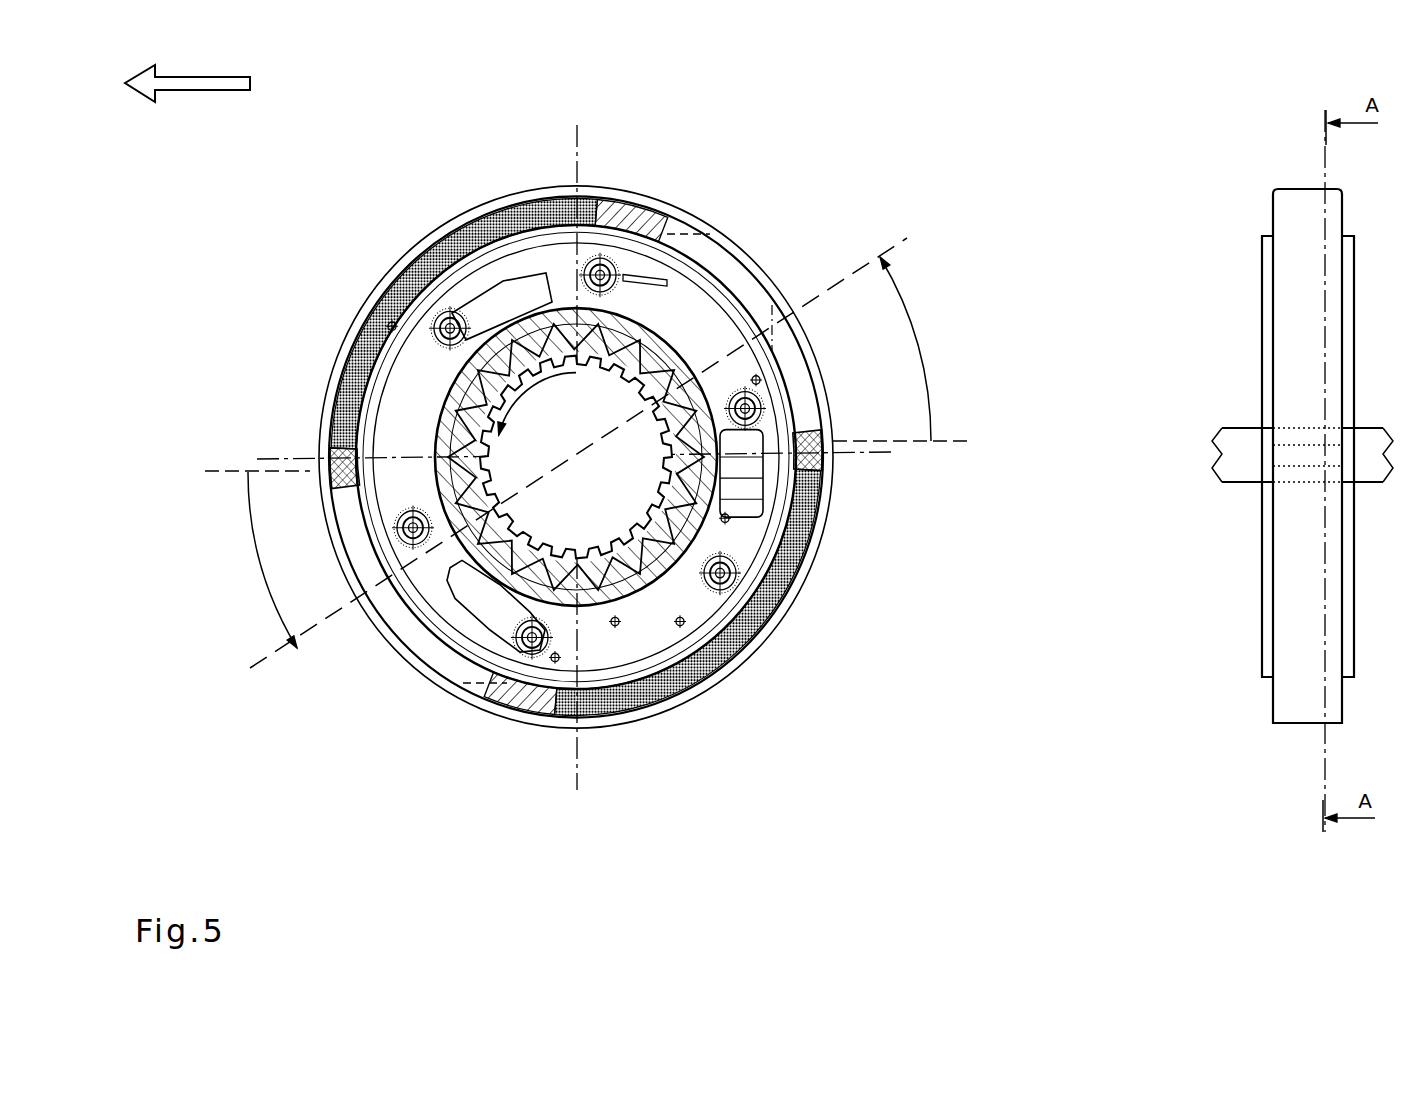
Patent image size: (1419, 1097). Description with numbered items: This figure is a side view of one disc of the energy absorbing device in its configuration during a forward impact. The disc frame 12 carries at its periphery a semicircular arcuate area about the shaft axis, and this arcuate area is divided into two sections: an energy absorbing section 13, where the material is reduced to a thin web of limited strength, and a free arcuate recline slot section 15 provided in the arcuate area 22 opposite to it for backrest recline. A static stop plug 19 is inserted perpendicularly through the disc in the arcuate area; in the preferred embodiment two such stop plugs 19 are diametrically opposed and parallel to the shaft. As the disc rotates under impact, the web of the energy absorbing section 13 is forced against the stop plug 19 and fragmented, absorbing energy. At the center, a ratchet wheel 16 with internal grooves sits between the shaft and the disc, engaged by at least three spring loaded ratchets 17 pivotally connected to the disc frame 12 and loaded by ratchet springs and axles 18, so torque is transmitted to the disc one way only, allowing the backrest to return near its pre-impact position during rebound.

The disc frame and arcuate area 12 is at (493, 203).
The disc arcuate energy absorbing section 13 is at (595, 453).
The disc arcuate recline slot section 15 is at (720, 268).
The ratchet wheel 16 is at (440, 383).
The ratchets and axles 17 is at (407, 260).
The ratchet springs and axles 18 is at (780, 622).
The static stop plug 19 is at (318, 424).
The arcuate area of disc 22 is at (812, 570).